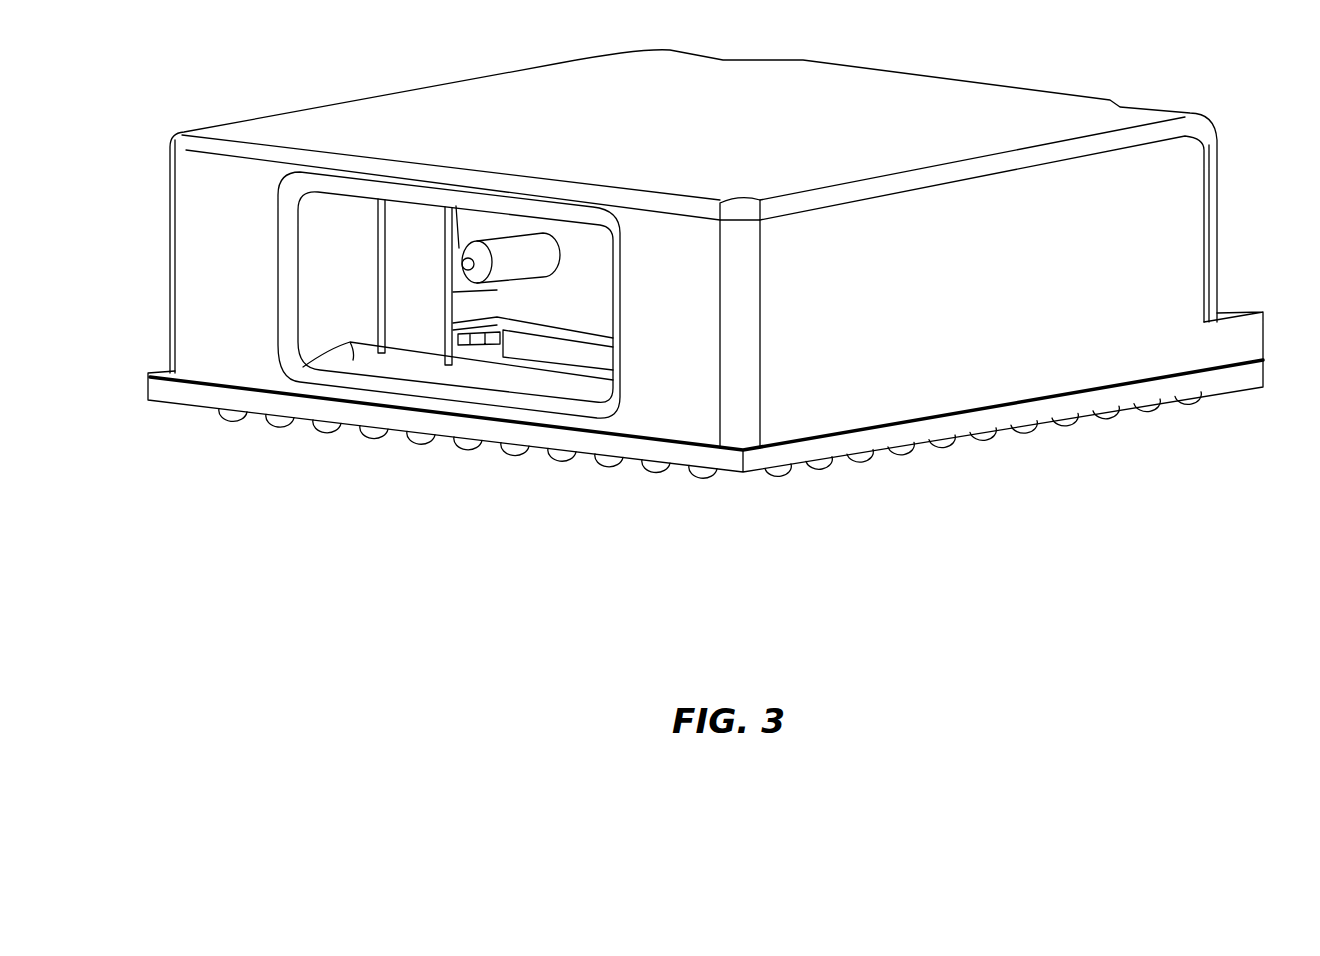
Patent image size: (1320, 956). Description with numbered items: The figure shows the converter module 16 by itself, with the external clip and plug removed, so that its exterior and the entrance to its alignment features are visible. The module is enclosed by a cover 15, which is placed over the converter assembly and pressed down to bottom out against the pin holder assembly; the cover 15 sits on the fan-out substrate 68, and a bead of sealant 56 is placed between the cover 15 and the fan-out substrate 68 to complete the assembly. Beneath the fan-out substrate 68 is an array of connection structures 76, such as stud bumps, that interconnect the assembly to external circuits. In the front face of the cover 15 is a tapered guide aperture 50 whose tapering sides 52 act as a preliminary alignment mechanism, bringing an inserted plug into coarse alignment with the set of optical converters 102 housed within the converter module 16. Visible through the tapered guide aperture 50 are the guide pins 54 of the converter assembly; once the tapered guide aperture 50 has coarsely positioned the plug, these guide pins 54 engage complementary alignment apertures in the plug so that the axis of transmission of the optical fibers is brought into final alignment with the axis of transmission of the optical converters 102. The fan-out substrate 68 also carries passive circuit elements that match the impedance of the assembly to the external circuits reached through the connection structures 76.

The cover 15 is at (920, 73).
The converter module 16 is at (660, 567).
The tapered guide aperture 50 is at (310, 321).
The tapering sides 52 is at (330, 240).
The guide pins 54 is at (513, 236).
The bead of sealant 56 is at (1127, 383).
The fan-out substrate 68 is at (958, 444).
The connection structures 76 is at (1062, 430).
The optical converters 102 is at (586, 272).